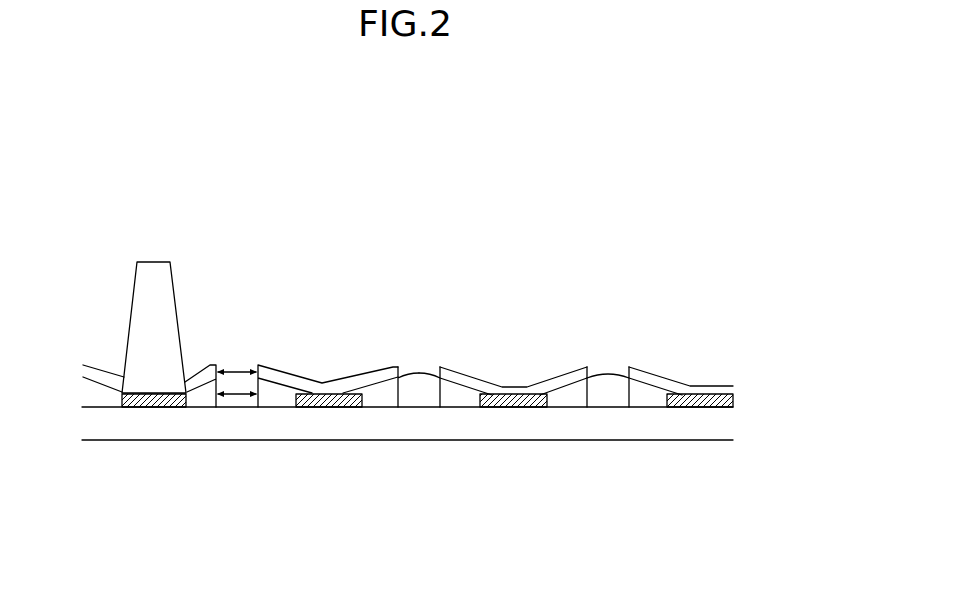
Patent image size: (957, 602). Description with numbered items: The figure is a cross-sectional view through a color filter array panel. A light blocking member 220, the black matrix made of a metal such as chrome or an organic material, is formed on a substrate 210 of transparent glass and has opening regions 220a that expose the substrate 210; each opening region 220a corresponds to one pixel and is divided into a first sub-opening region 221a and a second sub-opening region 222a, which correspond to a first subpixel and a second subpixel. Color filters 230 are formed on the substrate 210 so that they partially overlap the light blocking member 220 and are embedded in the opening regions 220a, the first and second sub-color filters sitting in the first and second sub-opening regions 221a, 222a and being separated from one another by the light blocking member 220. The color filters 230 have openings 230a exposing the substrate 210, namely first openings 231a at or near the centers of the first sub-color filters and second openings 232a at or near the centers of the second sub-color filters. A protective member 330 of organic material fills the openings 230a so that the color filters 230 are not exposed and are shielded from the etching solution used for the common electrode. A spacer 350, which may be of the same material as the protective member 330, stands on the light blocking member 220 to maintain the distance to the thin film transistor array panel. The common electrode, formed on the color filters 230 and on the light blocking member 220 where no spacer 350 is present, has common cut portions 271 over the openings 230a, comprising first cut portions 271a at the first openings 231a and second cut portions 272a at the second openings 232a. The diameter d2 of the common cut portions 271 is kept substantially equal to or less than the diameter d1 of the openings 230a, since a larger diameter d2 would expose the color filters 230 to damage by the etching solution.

The substrate 210 is at (297, 430).
The light blocking member 220 is at (142, 398).
The opening regions 220a is at (444, 464).
The first sub-opening region 221a is at (532, 446).
The second sub-opening region 222a is at (362, 400).
The color filters 230 is at (648, 397).
The openings 230a is at (468, 332).
The first openings 231a is at (587, 366).
The second opening 232a is at (408, 372).
The common cut portions 271 is at (535, 332).
The first cut portions 271a is at (600, 398).
The second cut portions 272a is at (433, 367).
The protective member 330 is at (216, 382).
The spacer 350 is at (153, 278).
The diameter of the openings d1 is at (240, 400).
The diameter of the common cut portions d2 is at (240, 362).